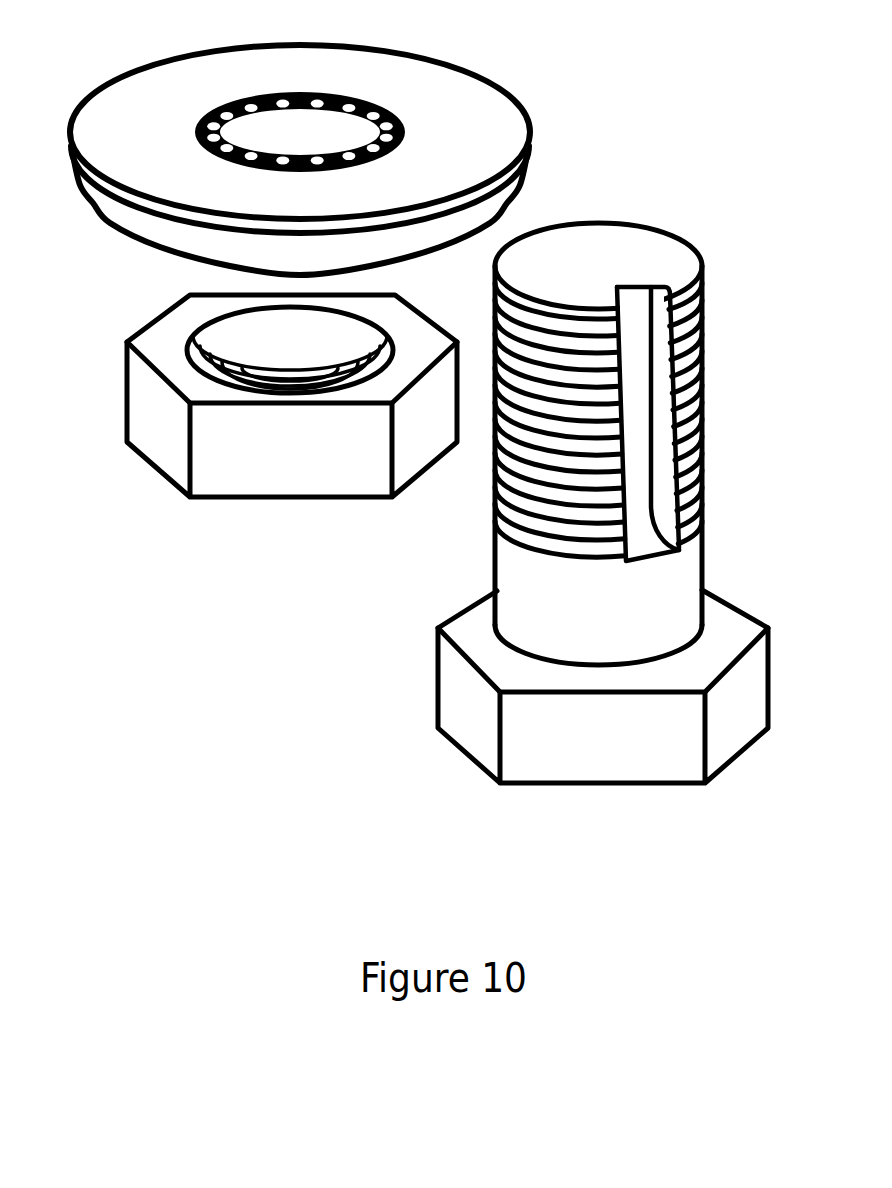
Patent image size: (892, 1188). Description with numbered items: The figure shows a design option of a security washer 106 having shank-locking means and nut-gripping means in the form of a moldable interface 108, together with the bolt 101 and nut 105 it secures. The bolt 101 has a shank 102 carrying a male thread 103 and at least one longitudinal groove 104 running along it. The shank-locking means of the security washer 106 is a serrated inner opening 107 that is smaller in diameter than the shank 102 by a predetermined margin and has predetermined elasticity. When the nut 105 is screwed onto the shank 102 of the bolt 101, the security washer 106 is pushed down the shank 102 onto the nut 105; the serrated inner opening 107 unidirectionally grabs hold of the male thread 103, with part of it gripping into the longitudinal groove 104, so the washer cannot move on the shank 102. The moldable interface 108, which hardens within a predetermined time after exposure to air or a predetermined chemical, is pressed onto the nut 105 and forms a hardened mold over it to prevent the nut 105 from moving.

The bolt 101 is at (465, 693).
The shank 102 is at (653, 612).
The male thread 103 is at (707, 470).
The longitudinal groove 104 is at (632, 397).
The nut 105 is at (273, 468).
The security washer 106 is at (157, 105).
The serrated inner opening 107 is at (308, 128).
The moldable interface 108 is at (178, 234).